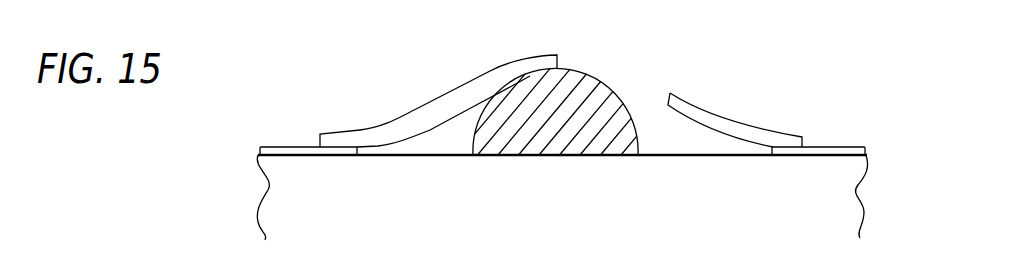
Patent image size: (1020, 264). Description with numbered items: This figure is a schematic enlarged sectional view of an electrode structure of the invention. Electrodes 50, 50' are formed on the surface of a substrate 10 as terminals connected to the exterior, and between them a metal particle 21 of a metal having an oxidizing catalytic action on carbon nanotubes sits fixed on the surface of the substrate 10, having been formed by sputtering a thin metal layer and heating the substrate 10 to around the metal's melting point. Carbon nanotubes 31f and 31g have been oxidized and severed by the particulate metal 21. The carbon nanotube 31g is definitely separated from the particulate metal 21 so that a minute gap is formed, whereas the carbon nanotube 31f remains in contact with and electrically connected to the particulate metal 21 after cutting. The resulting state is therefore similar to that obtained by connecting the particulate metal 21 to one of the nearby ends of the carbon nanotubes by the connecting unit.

The substrate 10 is at (840, 182).
The metal particle 21 is at (530, 153).
The electrode 50 is at (308, 122).
The electrode 50' is at (821, 123).
The carbon nanotube 31f is at (412, 123).
The carbon nanotube 31g is at (717, 123).